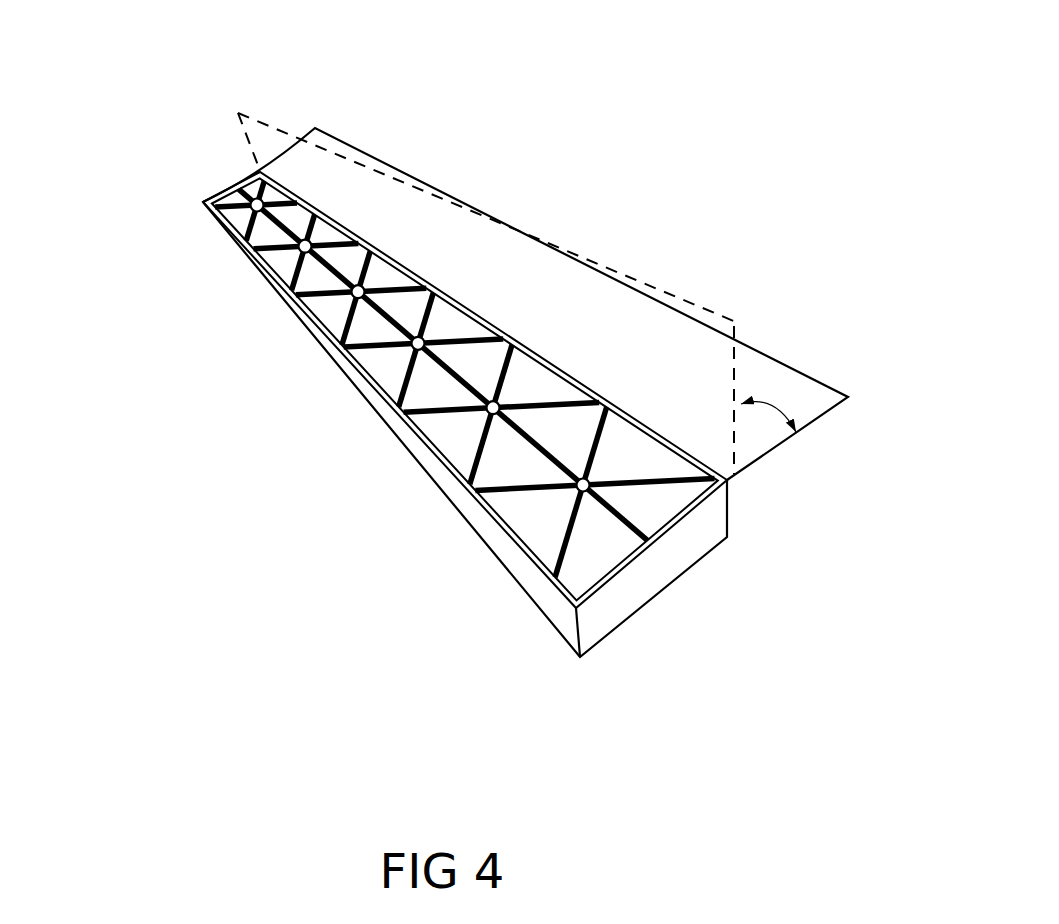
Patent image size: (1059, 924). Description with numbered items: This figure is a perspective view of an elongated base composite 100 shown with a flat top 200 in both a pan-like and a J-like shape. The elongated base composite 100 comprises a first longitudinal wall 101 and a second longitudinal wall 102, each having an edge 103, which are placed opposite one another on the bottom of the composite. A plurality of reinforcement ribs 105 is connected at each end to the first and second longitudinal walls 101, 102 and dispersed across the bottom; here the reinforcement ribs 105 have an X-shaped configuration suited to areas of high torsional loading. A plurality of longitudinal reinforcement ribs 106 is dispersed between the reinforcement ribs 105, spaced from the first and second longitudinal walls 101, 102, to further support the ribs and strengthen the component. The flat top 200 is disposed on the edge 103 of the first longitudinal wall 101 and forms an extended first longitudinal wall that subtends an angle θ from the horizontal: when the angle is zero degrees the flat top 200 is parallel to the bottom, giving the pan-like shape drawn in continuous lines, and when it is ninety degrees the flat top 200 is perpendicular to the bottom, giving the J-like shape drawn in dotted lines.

The elongated base composite 100 is at (569, 199).
The flat top 200 is at (689, 298).
The first longitudinal wall 101 is at (640, 458).
The second longitudinal wall 102 is at (381, 406).
The edge 103 is at (336, 236).
The reinforcement ribs 105 is at (457, 418).
The longitudinal reinforcement ribs 106 is at (275, 230).